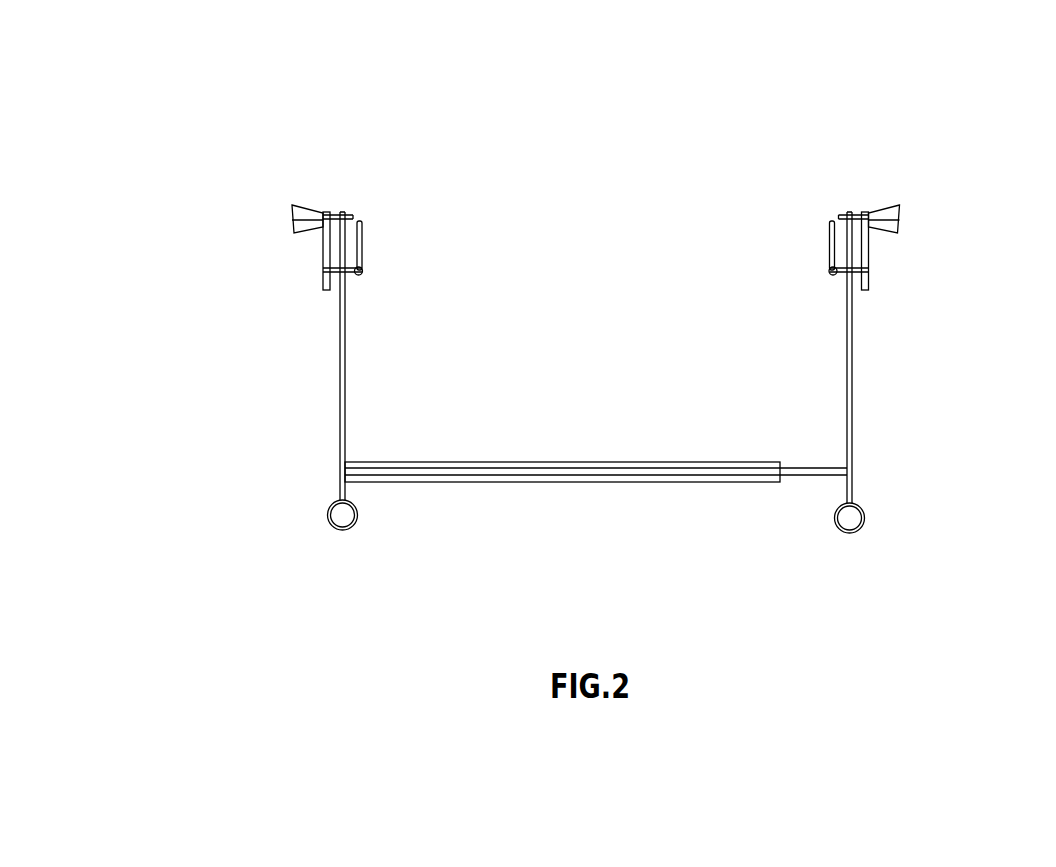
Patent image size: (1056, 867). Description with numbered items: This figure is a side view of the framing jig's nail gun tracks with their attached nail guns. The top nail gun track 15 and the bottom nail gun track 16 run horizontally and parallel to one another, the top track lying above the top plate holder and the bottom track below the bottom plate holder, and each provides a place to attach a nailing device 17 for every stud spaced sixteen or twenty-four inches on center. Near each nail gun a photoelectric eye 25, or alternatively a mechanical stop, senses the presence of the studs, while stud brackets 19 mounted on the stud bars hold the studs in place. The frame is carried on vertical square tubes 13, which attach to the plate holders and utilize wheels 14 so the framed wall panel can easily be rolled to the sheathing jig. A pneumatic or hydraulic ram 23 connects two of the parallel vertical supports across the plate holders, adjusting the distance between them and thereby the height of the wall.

The vertical square tube 13 is at (340, 383).
The wheel 14 is at (864, 518).
The top nail gun track 15 is at (869, 282).
The bottom nail gun track 16 is at (322, 258).
The nailing device 17 is at (293, 206).
The stud bracket 19 is at (360, 275).
The pneumatic or hydraulic ram 23 is at (583, 482).
The photoelectric eye 25 is at (363, 243).